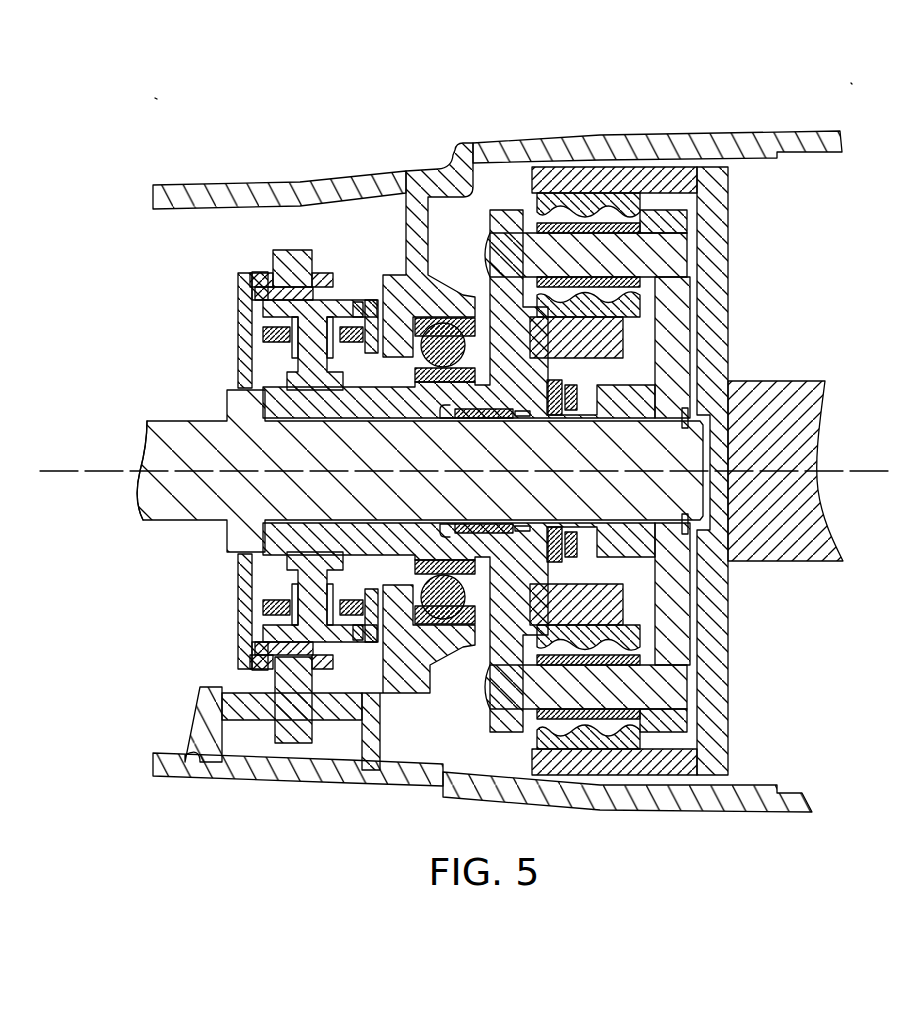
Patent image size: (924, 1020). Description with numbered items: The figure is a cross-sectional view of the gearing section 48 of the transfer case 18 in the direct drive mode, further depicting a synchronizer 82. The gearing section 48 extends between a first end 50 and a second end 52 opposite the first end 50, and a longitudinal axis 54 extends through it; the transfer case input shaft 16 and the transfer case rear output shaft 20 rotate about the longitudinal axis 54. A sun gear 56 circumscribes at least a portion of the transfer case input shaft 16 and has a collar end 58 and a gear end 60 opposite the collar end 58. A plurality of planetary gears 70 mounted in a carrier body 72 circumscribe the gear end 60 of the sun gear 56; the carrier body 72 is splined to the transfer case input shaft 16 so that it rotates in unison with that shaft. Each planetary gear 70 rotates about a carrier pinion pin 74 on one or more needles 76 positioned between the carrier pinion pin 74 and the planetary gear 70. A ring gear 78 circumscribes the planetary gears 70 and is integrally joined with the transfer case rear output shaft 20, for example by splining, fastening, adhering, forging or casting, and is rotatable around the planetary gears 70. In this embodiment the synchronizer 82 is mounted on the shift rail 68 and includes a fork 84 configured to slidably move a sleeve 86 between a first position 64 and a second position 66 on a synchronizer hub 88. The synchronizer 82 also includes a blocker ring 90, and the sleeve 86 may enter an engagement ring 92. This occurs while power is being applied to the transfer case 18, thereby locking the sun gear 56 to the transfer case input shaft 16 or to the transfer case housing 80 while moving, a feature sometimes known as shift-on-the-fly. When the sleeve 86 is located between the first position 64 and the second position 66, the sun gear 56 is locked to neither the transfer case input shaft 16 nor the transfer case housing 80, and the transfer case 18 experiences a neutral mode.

The transfer case input shaft 16 is at (140, 487).
The transfer case 18 is at (849, 86).
The transfer case rear output shaft 20 is at (837, 533).
The gearing section 48 is at (160, 100).
The first end 50 is at (150, 195).
The second end 52 is at (838, 140).
The longitudinal axis 54 is at (858, 471).
The sun gear 56 is at (367, 545).
The collar end 58 is at (150, 430).
The gear end 60 is at (665, 335).
The first position 64 is at (240, 272).
The second position 66 is at (378, 272).
The shift rail 68 is at (240, 708).
The planetary gears 70 is at (650, 200).
The carrier body 72 is at (672, 305).
The carrier pinion pin 74 is at (650, 258).
The needles 76 is at (600, 225).
The ring gear 78 is at (593, 182).
The transfer case housing 80 is at (420, 277).
The synchronizer 82 is at (267, 264).
The fork 84 is at (293, 265).
The sleeve 86 is at (260, 682).
The synchronizer hub 88 is at (295, 375).
The blocker ring 90 is at (358, 303).
The engagement ring 92 is at (255, 292).